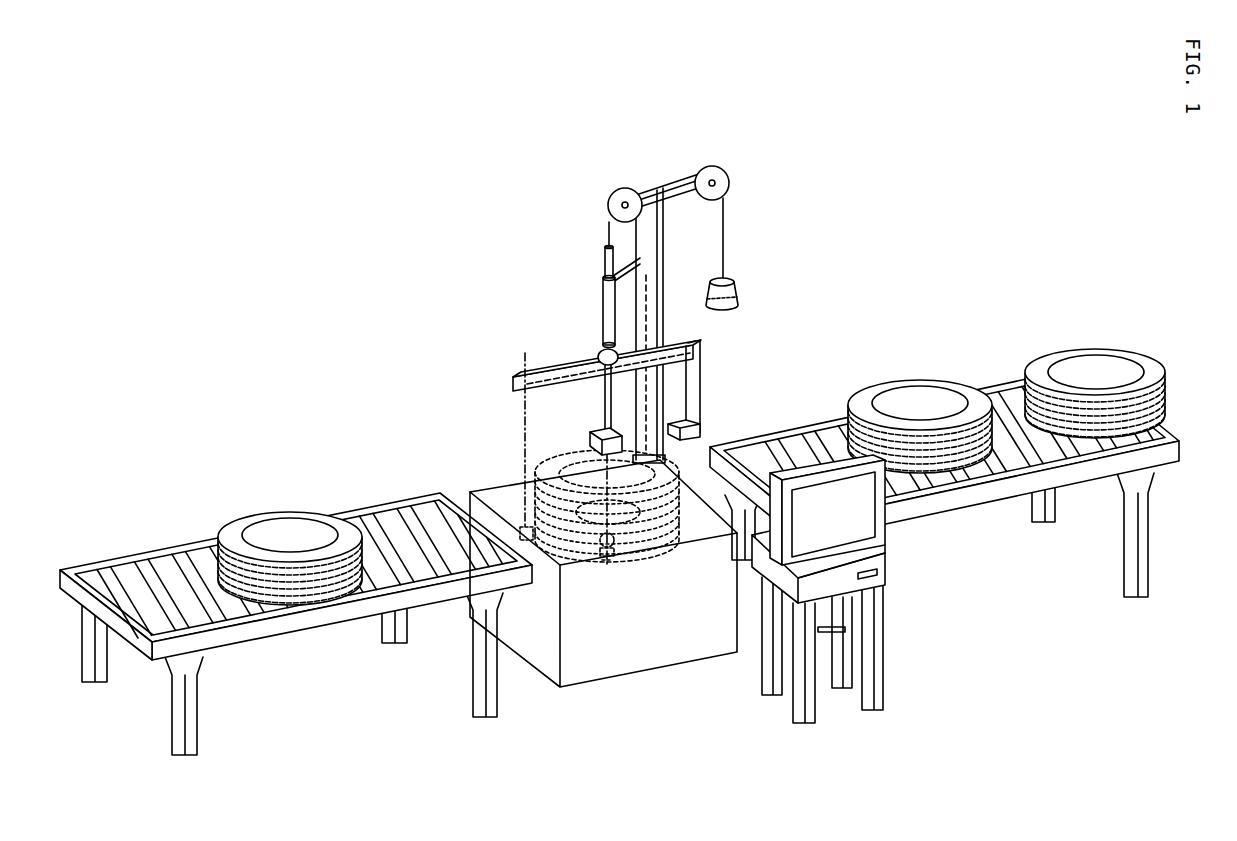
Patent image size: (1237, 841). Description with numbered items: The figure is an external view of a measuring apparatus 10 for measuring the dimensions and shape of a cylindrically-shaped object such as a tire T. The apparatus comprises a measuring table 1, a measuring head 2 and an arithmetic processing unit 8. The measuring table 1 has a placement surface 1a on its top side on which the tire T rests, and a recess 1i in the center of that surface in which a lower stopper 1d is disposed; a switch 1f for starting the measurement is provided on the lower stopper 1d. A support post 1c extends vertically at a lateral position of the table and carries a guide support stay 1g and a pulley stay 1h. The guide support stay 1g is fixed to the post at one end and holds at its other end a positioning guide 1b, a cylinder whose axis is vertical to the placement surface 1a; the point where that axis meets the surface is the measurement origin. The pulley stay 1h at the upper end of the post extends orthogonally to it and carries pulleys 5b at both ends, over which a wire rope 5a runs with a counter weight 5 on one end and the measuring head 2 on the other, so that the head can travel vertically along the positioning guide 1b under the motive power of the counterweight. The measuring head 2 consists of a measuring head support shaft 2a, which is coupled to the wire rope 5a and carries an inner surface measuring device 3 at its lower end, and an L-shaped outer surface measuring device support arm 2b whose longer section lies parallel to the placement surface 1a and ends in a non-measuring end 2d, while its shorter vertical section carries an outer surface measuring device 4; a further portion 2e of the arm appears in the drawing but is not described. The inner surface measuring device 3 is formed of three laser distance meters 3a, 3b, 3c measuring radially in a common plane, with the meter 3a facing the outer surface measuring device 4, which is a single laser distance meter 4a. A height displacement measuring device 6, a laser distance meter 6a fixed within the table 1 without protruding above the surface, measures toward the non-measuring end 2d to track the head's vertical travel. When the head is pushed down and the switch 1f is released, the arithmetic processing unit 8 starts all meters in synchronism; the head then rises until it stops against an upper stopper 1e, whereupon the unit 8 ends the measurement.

The measuring apparatus 10 is at (634, 24).
The measuring table 1 is at (627, 677).
The placement surface 1a is at (680, 532).
The positioning guide 1b is at (603, 307).
The support post 1c is at (645, 247).
The lower stopper 1d is at (605, 548).
The upper stopper 1e is at (597, 352).
The switch 1f is at (612, 545).
The guide support stay 1g is at (645, 297).
The pulley stay 1h is at (665, 185).
The recess 1i is at (560, 570).
The measuring head 2 is at (550, 370).
The measuring head support shaft 2a is at (604, 415).
The outer surface measuring device support arm 2b is at (568, 364).
The non-measuring end 2d is at (524, 392).
The vertical arm portion 2e is at (701, 417).
The inner surface measuring device 3 is at (588, 443).
The laser distance meter 3a is at (678, 352).
The laser distance meter 3b is at (381, 427).
The laser distance meter 3c is at (381, 457).
The outer surface measuring device 4 is at (738, 421).
The laser distance meter 4a is at (701, 428).
The counter weight 5 is at (728, 287).
The wire rope 5a is at (724, 250).
The pulleys 5b is at (713, 167).
The height displacement measuring device 6 is at (484, 501).
The laser distance meter 6a is at (301, 457).
The arithmetic processing unit 8 is at (888, 573).
The tire T is at (906, 385).